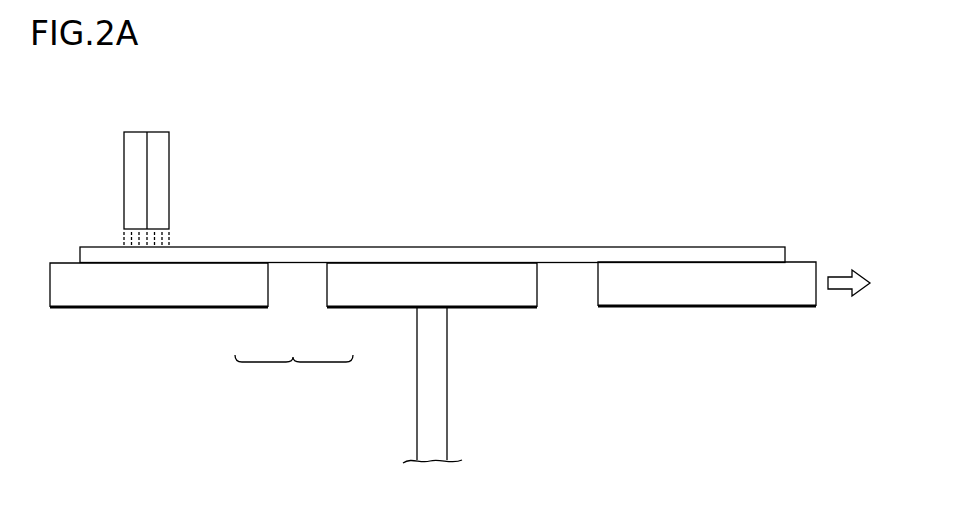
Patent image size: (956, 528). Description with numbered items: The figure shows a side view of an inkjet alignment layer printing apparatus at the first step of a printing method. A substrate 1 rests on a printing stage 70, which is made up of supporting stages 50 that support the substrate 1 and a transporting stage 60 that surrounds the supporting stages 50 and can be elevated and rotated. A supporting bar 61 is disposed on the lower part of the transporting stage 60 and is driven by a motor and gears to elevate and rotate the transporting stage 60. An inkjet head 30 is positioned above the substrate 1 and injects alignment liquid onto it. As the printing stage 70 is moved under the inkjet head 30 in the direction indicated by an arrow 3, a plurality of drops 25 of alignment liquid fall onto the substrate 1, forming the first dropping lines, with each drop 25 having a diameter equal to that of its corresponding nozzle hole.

The substrate 1 is at (100, 253).
The arrow 3 is at (838, 275).
The drops of alignment liquid 25 is at (171, 238).
The inkjet head 30 is at (175, 158).
The supporting stage 50 is at (237, 293).
The transporting stage 60 is at (352, 292).
The supporting bar 61 is at (433, 373).
The printing stage 70 is at (294, 374).